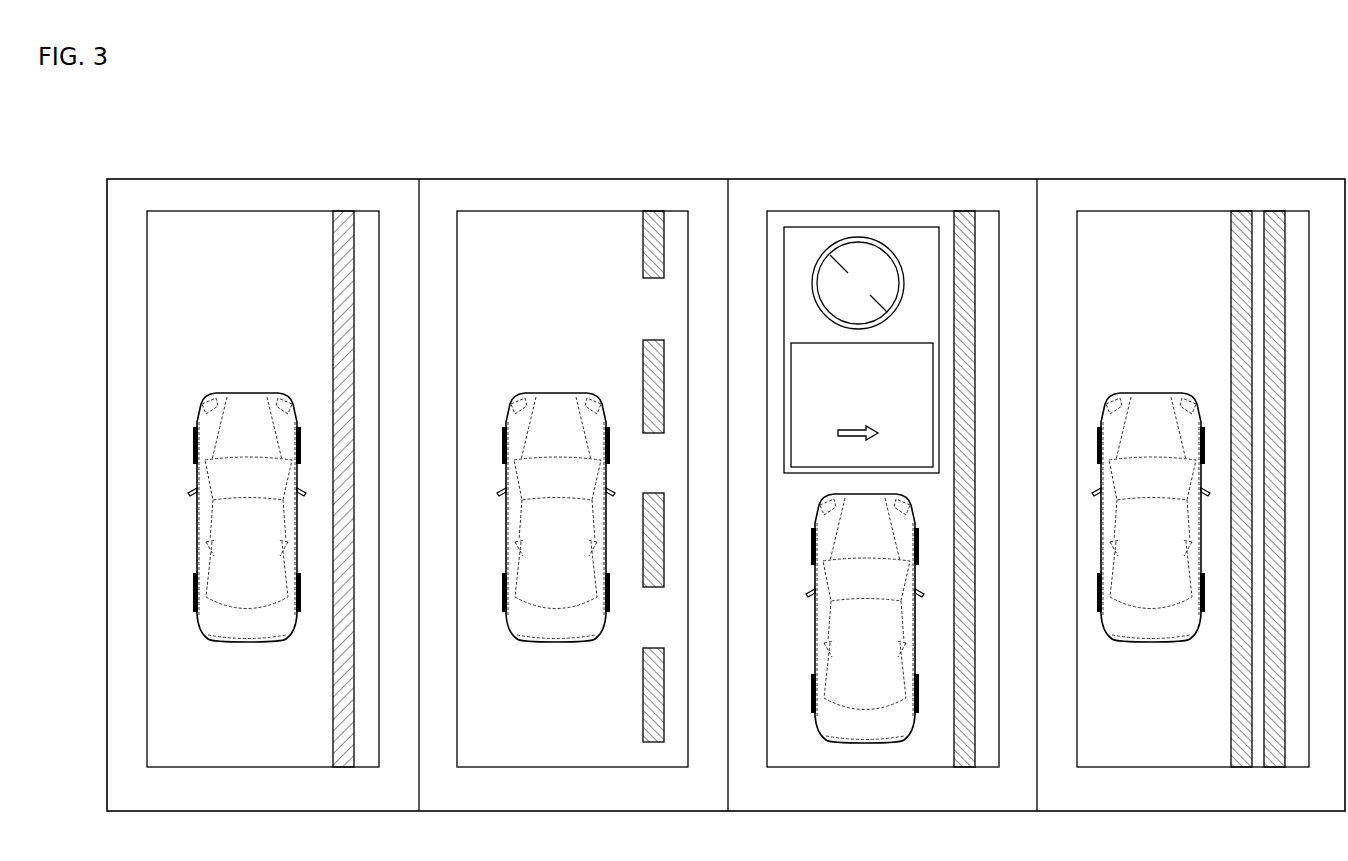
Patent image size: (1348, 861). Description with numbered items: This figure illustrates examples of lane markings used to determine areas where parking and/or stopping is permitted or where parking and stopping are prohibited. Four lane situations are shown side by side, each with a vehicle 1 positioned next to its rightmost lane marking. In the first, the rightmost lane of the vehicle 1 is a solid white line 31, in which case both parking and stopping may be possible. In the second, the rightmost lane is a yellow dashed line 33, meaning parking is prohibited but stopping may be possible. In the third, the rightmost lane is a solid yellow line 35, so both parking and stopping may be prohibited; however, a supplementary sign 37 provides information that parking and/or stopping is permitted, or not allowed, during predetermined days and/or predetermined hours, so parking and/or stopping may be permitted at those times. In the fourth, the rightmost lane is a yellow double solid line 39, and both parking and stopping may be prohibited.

The vehicle 1 is at (237, 640).
The solid white line 31 is at (339, 216).
The yellow dashed line 33 is at (650, 214).
The solid yellow line 35 is at (960, 215).
The supplementary sign 37 is at (838, 230).
The yellow double solid line 39 is at (1276, 215).